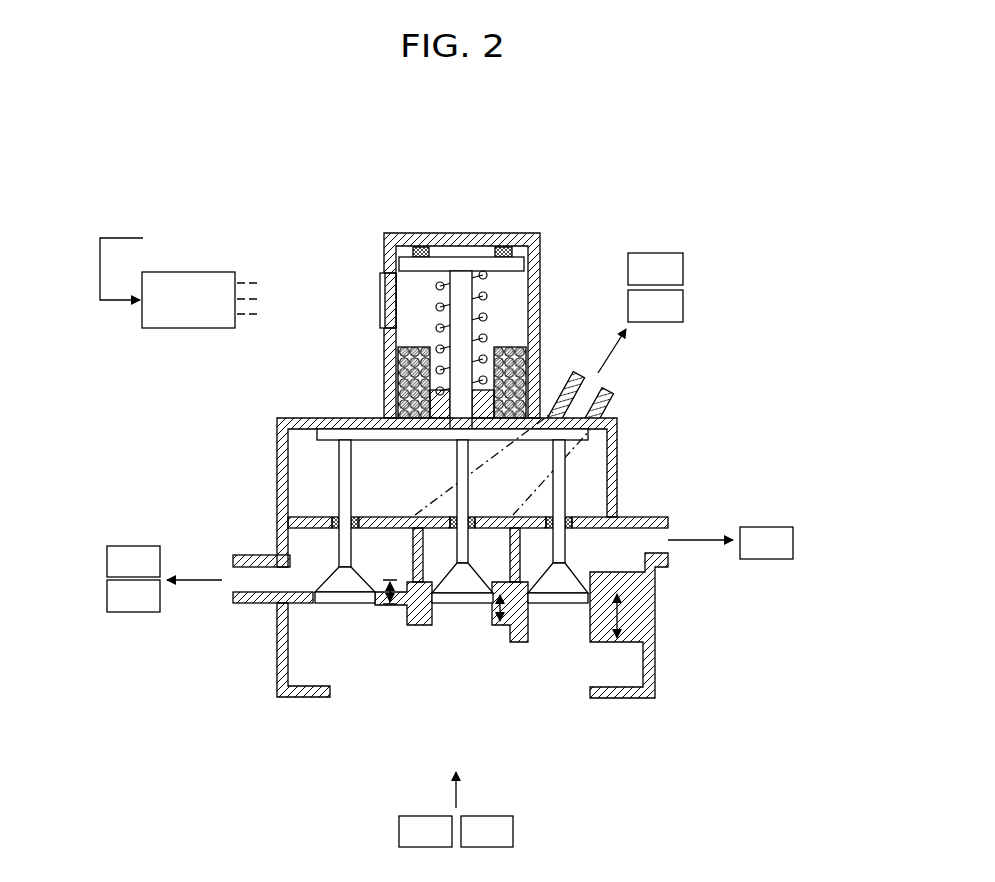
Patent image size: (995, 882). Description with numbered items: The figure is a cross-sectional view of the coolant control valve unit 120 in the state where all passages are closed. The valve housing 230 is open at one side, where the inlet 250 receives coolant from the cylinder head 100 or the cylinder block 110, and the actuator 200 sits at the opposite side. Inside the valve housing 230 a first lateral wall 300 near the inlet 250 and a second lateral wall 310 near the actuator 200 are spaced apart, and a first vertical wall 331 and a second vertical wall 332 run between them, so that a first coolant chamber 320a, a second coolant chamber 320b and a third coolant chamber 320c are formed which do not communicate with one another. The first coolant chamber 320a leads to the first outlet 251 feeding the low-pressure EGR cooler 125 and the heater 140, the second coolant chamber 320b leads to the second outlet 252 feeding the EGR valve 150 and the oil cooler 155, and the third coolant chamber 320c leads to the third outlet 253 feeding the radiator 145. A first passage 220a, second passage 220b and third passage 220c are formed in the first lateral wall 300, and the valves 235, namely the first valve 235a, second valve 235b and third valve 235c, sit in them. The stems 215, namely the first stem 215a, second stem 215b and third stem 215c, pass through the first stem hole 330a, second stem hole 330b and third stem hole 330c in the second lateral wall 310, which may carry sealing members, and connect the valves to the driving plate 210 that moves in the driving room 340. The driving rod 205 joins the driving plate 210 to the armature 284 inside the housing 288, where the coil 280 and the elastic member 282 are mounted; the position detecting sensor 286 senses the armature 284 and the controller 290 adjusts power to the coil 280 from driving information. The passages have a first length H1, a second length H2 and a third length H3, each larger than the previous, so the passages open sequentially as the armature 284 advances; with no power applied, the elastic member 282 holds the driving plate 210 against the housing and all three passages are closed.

The cylinder head 100 is at (427, 809).
The cylinder block 110 is at (487, 831).
The coolant control valve unit 120 is at (629, 478).
The low-pressure EGR cooler 125 is at (133, 561).
The heater 140 is at (164, 596).
The radiator 145 is at (730, 543).
The EGR valve 150 is at (655, 269).
The oil cooler 155 is at (640, 331).
The actuator 200 is at (537, 222).
The driving rod 205 is at (461, 282).
The driving plate 210 is at (327, 435).
The stems 215 is at (212, 443).
The first stem 215a is at (345, 450).
The second stem 215b is at (457, 452).
The third stem 215c is at (553, 465).
The first passage 220a is at (323, 605).
The second passage 220b is at (488, 605).
The third passage 220c is at (582, 567).
The valve housing 230 is at (273, 608).
The valves 235 is at (327, 715).
The first valve 235a is at (352, 605).
The second valve 235b is at (470, 605).
The third valve 235c is at (577, 605).
The inlet 250 is at (573, 694).
The first outlet 251 is at (257, 582).
The second outlet 252 is at (613, 403).
The third outlet 253 is at (657, 545).
The coil 280 is at (400, 350).
The elastic member 282 is at (437, 297).
The armature 284 is at (405, 258).
The position detecting sensor 286 is at (383, 302).
The housing 288 is at (538, 258).
The controller 290 is at (188, 330).
The first lateral wall 300 is at (307, 605).
The second lateral wall 310 is at (300, 518).
The first coolant chamber 320a is at (380, 572).
The second coolant chamber 320b is at (437, 570).
The third coolant chamber 320c is at (537, 570).
The first stem hole 330a is at (355, 517).
The second stem hole 330b is at (472, 517).
The third stem hole 330c is at (570, 530).
The first vertical wall 331 is at (413, 545).
The second vertical wall 332 is at (510, 545).
The driving room 340 is at (596, 452).
The first length H1 is at (392, 606).
The second length H2 is at (500, 625).
The third length H3 is at (617, 642).